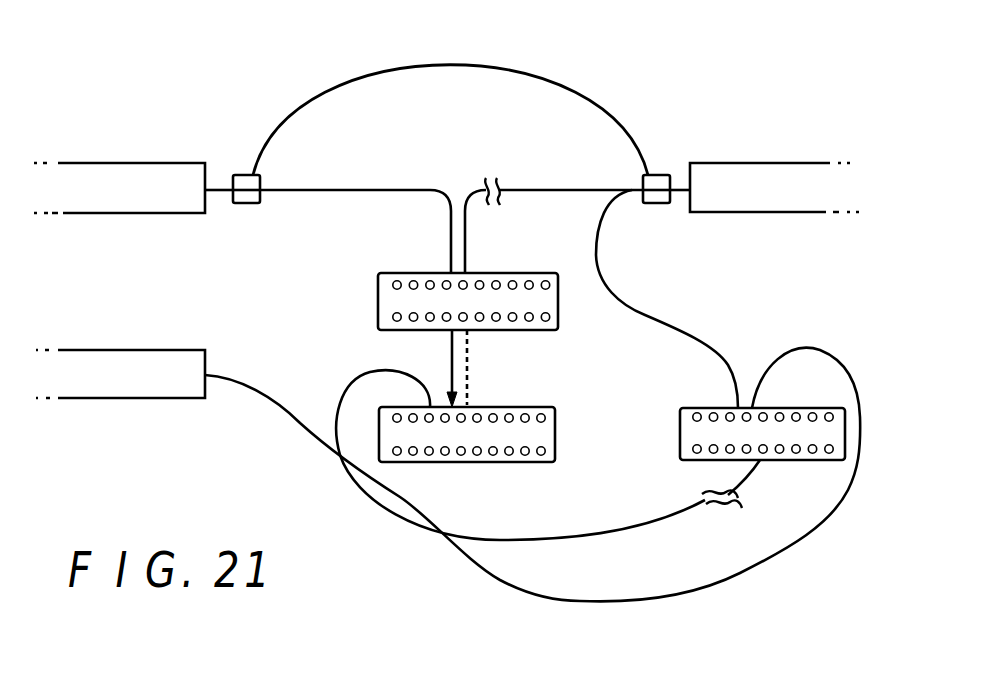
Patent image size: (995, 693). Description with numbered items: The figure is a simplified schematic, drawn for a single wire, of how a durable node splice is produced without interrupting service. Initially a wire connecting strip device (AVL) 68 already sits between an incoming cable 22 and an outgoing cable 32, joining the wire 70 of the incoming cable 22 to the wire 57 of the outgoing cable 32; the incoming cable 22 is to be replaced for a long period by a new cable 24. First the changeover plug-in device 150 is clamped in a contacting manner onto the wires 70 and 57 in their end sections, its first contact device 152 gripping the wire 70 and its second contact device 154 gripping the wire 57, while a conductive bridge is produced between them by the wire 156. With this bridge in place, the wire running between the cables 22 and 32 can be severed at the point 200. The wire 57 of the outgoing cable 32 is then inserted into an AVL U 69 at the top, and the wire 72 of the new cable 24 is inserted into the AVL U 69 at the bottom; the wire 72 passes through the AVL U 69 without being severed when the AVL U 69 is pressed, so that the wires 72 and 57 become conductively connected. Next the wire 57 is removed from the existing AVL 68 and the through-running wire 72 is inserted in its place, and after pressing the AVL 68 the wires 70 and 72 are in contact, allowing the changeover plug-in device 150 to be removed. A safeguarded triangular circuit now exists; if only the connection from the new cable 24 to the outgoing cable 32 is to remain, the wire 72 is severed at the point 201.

The incoming cable 22 is at (112, 172).
The new cable 24 is at (103, 357).
The outgoing cable 32 is at (771, 165).
The first contact device 152 is at (251, 175).
The second contact device 154 is at (661, 175).
The wire 156 is at (373, 72).
The changeover plug-in device 150 is at (526, 56).
The wire of the incoming cable 70 is at (365, 188).
The wire of the outgoing cable 57 is at (566, 190).
The point 200 is at (498, 162).
The wire connecting strip device (AVL) 68 is at (378, 280).
The AVL U 69 is at (714, 408).
The wire of the new cable 72 is at (503, 538).
The point 201 is at (748, 514).